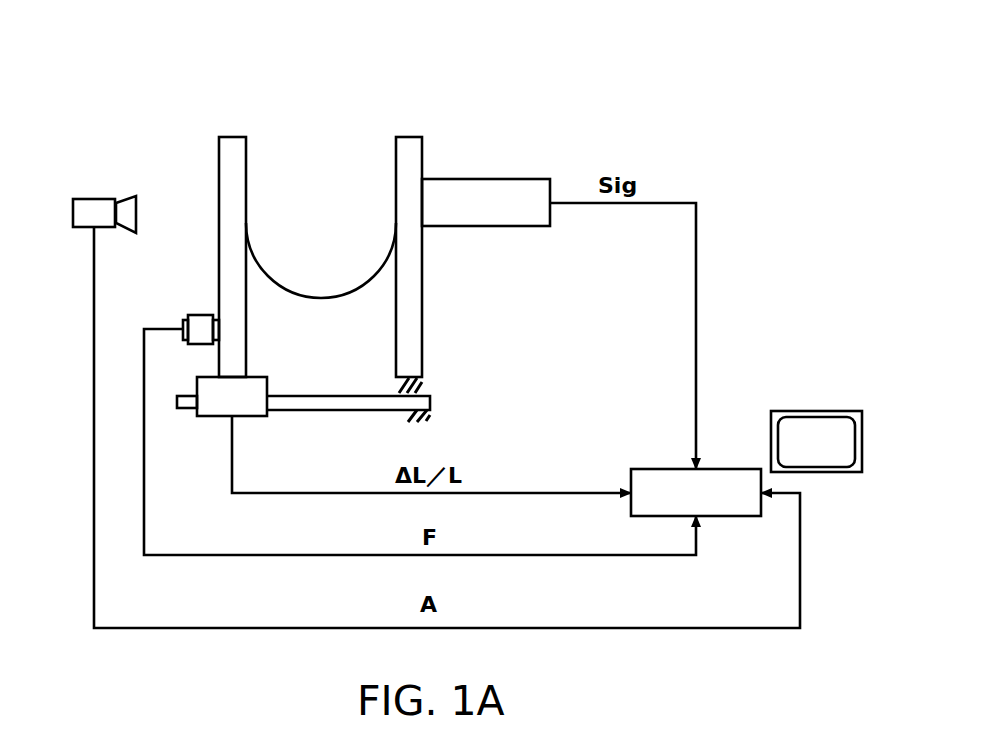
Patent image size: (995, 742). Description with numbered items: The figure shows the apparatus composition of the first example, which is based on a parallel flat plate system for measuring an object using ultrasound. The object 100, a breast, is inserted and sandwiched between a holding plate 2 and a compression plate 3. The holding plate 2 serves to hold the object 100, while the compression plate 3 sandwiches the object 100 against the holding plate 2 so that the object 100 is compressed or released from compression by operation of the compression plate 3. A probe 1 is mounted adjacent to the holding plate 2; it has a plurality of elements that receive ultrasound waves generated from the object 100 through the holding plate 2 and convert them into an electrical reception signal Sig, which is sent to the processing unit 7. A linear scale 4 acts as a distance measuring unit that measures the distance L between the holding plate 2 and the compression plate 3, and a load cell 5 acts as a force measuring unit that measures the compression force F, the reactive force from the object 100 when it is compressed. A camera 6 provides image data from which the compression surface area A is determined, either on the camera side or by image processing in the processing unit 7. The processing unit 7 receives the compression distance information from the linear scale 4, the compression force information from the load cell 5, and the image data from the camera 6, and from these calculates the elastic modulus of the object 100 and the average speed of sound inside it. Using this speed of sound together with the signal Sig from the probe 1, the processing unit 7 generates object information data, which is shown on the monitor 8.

The object 100 is at (311, 152).
The probe 1 is at (523, 183).
The holding plate 2 is at (408, 150).
The compression plate 3 is at (233, 150).
The linear scale 4 is at (205, 385).
The load cell 5 is at (204, 318).
The camera 6 is at (100, 202).
The processing unit 7 is at (696, 492).
The monitor 8 is at (808, 427).